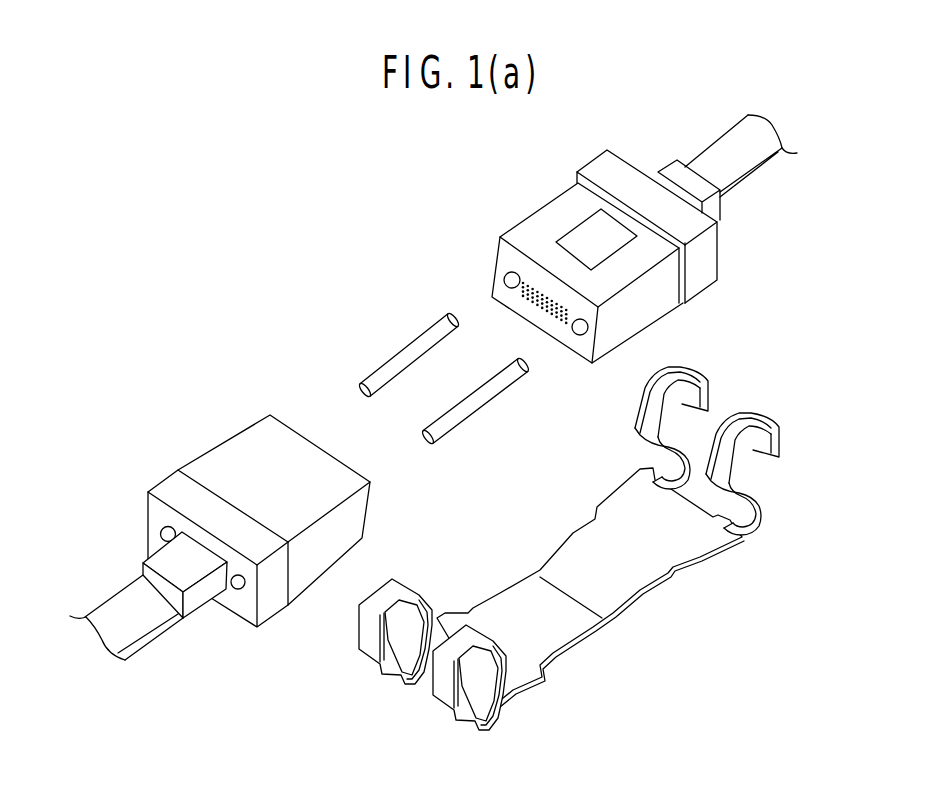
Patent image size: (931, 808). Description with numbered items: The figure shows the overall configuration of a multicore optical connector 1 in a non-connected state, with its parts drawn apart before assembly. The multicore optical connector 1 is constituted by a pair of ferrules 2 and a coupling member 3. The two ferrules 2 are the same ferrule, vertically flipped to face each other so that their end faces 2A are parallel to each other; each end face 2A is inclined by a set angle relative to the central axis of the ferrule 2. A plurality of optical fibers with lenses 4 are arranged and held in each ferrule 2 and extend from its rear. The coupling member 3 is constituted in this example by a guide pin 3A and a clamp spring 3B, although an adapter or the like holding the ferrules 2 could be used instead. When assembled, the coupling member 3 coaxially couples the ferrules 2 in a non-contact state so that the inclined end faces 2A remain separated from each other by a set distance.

The multicore optical connector 1 is at (367, 234).
The ferrule 2 is at (537, 209).
The end face 2A is at (585, 345).
The coupling member 3 is at (566, 509).
The guide pin 3A is at (401, 344).
The clamp spring 3B is at (644, 601).
The optical fibers with lenses 4 is at (755, 178).